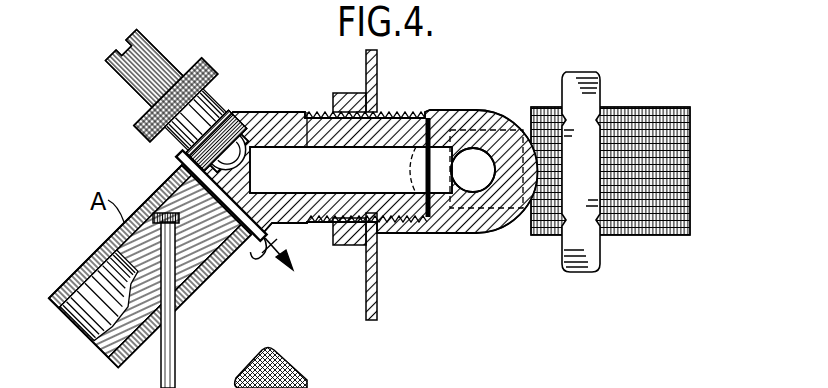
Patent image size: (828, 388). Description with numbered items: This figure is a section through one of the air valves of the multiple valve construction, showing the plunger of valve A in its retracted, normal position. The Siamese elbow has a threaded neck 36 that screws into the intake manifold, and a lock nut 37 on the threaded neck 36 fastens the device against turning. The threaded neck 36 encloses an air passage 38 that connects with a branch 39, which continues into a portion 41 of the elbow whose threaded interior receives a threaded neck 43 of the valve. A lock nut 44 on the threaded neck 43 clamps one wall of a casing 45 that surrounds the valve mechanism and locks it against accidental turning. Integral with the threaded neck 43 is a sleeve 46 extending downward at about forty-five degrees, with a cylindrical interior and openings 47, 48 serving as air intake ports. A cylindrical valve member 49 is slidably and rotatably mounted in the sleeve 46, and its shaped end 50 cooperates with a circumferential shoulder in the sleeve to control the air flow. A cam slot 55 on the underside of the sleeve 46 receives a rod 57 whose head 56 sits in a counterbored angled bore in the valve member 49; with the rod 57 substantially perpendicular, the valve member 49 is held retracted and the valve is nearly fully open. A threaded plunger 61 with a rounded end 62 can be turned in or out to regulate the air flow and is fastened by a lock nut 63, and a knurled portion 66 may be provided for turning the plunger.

The threaded neck 36 is at (653, 99).
The lock nut 37 is at (577, 80).
The air passage 38 is at (523, 130).
The branch 39 is at (472, 148).
The portion of the Siamese elbow 41 is at (425, 235).
The threaded neck 43 is at (318, 118).
The lock nut 44 is at (354, 97).
The casing 45 is at (378, 272).
The sleeve 46 is at (141, 261).
The opening 47 is at (193, 202).
The opening 48 is at (253, 268).
The cylindrical valve member 49 is at (93, 317).
The end 50 is at (235, 166).
The cam slot 55 is at (195, 306).
The head 56 is at (160, 214).
The rod 57 is at (176, 350).
The threaded plunger 61 is at (160, 54).
The rounded end 62 is at (259, 160).
The lock nut 63 is at (206, 112).
The knurled portion 66 is at (298, 378).